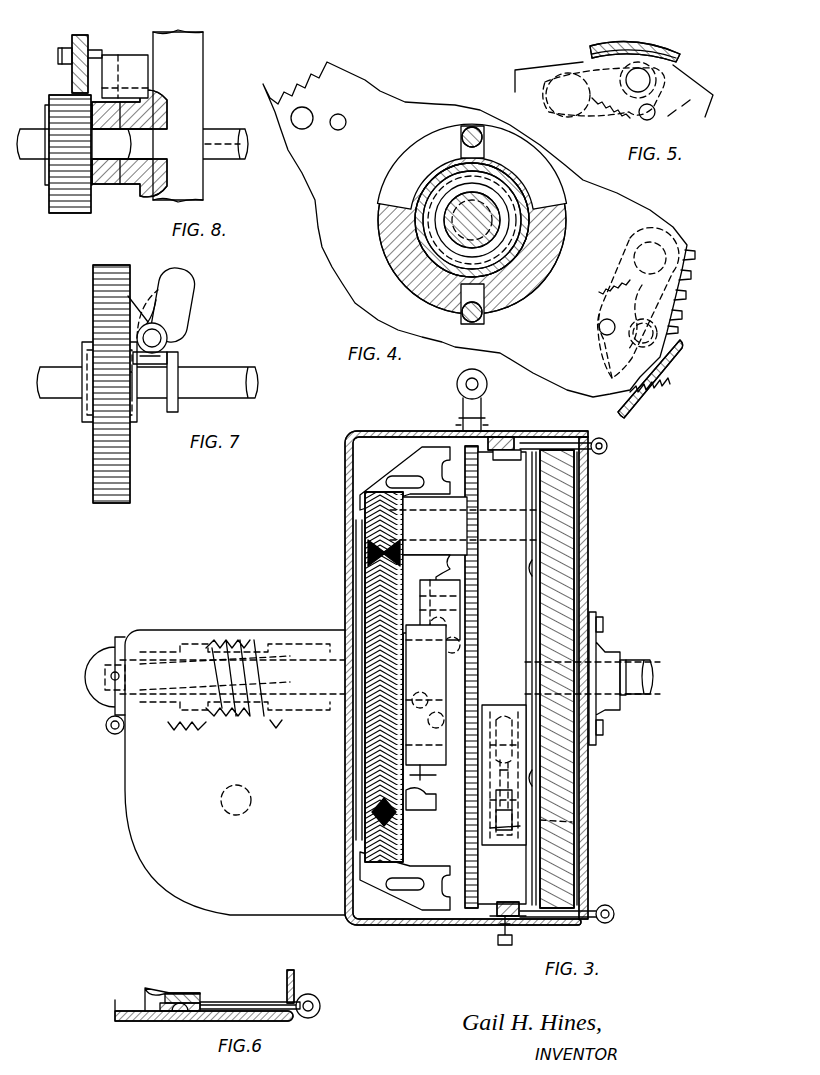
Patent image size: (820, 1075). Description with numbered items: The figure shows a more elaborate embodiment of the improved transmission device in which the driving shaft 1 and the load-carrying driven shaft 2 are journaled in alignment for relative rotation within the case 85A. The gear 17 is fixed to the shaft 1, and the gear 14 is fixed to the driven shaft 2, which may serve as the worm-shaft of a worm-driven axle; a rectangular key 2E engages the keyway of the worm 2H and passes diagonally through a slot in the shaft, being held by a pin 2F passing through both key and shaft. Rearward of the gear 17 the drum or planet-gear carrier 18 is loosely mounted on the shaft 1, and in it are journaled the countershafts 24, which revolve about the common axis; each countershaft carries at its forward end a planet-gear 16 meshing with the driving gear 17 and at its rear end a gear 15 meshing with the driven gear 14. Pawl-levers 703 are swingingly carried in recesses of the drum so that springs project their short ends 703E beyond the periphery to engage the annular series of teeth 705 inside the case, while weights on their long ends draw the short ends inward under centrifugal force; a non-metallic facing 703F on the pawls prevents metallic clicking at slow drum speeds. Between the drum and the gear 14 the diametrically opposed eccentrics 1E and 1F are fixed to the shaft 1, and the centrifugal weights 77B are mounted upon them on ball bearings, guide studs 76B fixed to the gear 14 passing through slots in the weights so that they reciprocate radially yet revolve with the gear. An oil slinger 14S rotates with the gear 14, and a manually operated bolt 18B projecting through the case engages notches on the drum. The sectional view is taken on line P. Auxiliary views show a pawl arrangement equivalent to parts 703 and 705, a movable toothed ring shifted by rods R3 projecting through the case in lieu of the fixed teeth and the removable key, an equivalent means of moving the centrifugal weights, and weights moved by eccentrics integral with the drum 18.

In FIG. 8, the driving shaft 1 is at (227, 144).
In FIG. 7, the driving shaft 1 is at (228, 368).
In FIG. 4, the driving shaft 1 is at (510, 226).
In FIG. 3, the driving shaft 1 is at (624, 662).
In FIG. 4, the eccentric 1E is at (456, 226).
In FIG. 4, the eccentric 1F is at (462, 242).
In FIG. 8, the driven shaft 2 is at (26, 128).
In FIG. 7, the driven shaft 2 is at (52, 354).
In FIG. 3, the driven shaft 2 is at (318, 634).
In FIG. 3, the key 2E is at (138, 652).
In FIG. 3, the pin 2F is at (110, 704).
In FIG. 3, the worm 2H is at (230, 644).
In FIG. 3, the driven gear 14 is at (356, 552).
In FIG. 3, the oil slinger 14S is at (418, 452).
In FIG. 3, the gear 15 is at (366, 512).
In FIG. 3, the planet-gear 16 is at (548, 476).
In FIG. 3, the driving gear 17 is at (584, 598).
In FIG. 8, the drum or planet-gear carrier 18 is at (203, 70).
In FIG. 7, the drum or planet-gear carrier 18 is at (96, 268).
In FIG. 4, the drum or planet-gear carrier 18 is at (548, 376).
In FIG. 5, the drum or planet-gear carrier 18 is at (516, 78).
In FIG. 3, the drum or planet-gear carrier 18 is at (538, 444).
In FIG. 3, the manually operated bolt 18B is at (458, 398).
In FIG. 3, the countershaft 24 is at (444, 502).
In FIG. 8, the guide stud 76B is at (148, 62).
In FIG. 4, the guide stud 76B is at (470, 134).
In FIG. 3, the guide stud 76B is at (440, 586).
In FIG. 8, the centrifugal weight 77B is at (112, 56).
In FIG. 7, the centrifugal weight 77B is at (181, 302).
In FIG. 4, the centrifugal weight 77B is at (404, 172).
In FIG. 3, the centrifugal weight 77B is at (446, 598).
In FIG. 4, the case 85A is at (652, 376).
In FIG. 5, the case 85A is at (588, 42).
In FIG. 3, the case 85A is at (564, 868).
In FIG. 6, the case 85A is at (322, 960).
In FIG. 4, the pawl-lever 703 is at (642, 282).
In FIG. 5, the pawl-lever 703 is at (604, 91).
In FIG. 3, the pawl-lever 703 is at (540, 752).
In FIG. 4, the short end of pawl-lever 703E is at (642, 342).
In FIG. 3, the short end of pawl-lever 703E is at (492, 828).
In FIG. 3, the facing 703F is at (548, 820).
In FIG. 4, the teeth 705 is at (618, 402).
In FIG. 5, the teeth 705 is at (582, 52).
In FIG. 3, the teeth 705 is at (498, 452).
In FIG. 6, the teeth 705 is at (194, 996).
In FIG. 3, the section line P— P is at (411, 582).
In FIG. 3, the rod R3 is at (614, 908).
In FIG. 6, the rod R3 is at (322, 998).